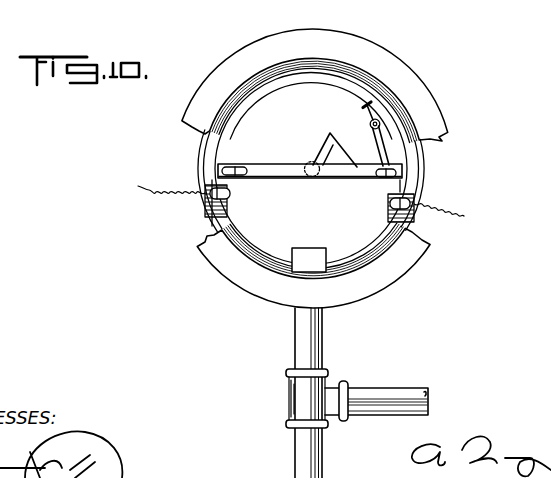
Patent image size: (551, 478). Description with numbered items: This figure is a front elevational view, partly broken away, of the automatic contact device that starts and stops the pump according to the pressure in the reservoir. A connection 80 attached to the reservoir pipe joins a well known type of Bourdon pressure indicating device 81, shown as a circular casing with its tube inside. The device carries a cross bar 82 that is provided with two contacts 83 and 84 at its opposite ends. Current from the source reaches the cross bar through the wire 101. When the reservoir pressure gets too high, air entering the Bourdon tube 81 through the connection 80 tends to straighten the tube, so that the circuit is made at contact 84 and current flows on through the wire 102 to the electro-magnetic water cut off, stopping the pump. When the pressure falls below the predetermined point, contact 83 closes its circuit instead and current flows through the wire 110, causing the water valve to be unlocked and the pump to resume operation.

The connection 80 is at (302, 324).
The Bourdon pressure indicating device 81 is at (282, 90).
The cross bar 82 is at (280, 164).
The contact 83 is at (233, 183).
The contact 84 is at (402, 181).
The wire 101 is at (303, 178).
The wire 102 is at (446, 215).
The wire 110 is at (160, 183).